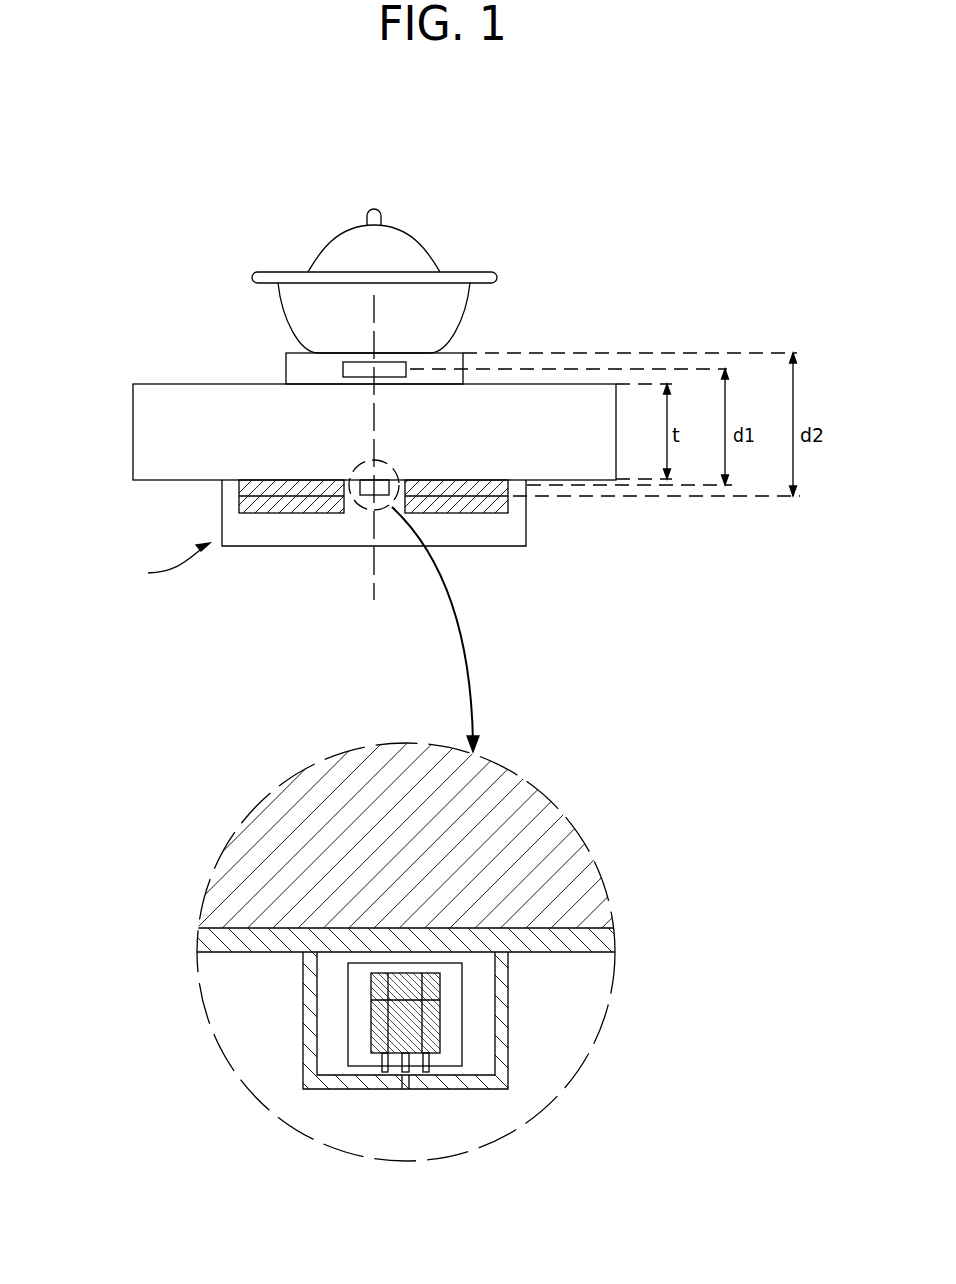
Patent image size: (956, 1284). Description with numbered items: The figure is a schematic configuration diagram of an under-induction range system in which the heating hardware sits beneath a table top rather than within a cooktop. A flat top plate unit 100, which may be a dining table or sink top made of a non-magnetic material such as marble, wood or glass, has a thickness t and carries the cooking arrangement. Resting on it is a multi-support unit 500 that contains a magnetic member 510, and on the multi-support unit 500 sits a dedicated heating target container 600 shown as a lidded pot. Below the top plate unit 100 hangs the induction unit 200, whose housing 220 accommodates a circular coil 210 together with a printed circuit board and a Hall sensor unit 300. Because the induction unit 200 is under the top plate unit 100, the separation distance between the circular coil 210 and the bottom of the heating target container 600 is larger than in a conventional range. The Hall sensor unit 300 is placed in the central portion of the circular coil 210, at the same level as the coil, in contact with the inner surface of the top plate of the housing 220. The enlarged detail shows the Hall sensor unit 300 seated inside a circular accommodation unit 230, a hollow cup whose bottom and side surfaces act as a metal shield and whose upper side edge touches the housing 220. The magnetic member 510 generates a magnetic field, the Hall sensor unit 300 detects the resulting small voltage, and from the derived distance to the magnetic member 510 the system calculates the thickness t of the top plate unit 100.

The top plate unit 100 is at (145, 434).
The induction unit 200 is at (159, 565).
The circular coil 210 is at (240, 486).
The housing 220 is at (527, 526).
The circular accommodation unit 230 is at (508, 993).
The Hall sensor unit 300 is at (348, 1027).
The multi-support unit 500 is at (286, 370).
The magnetic member 510 is at (367, 367).
The heating target container 600 is at (448, 303).